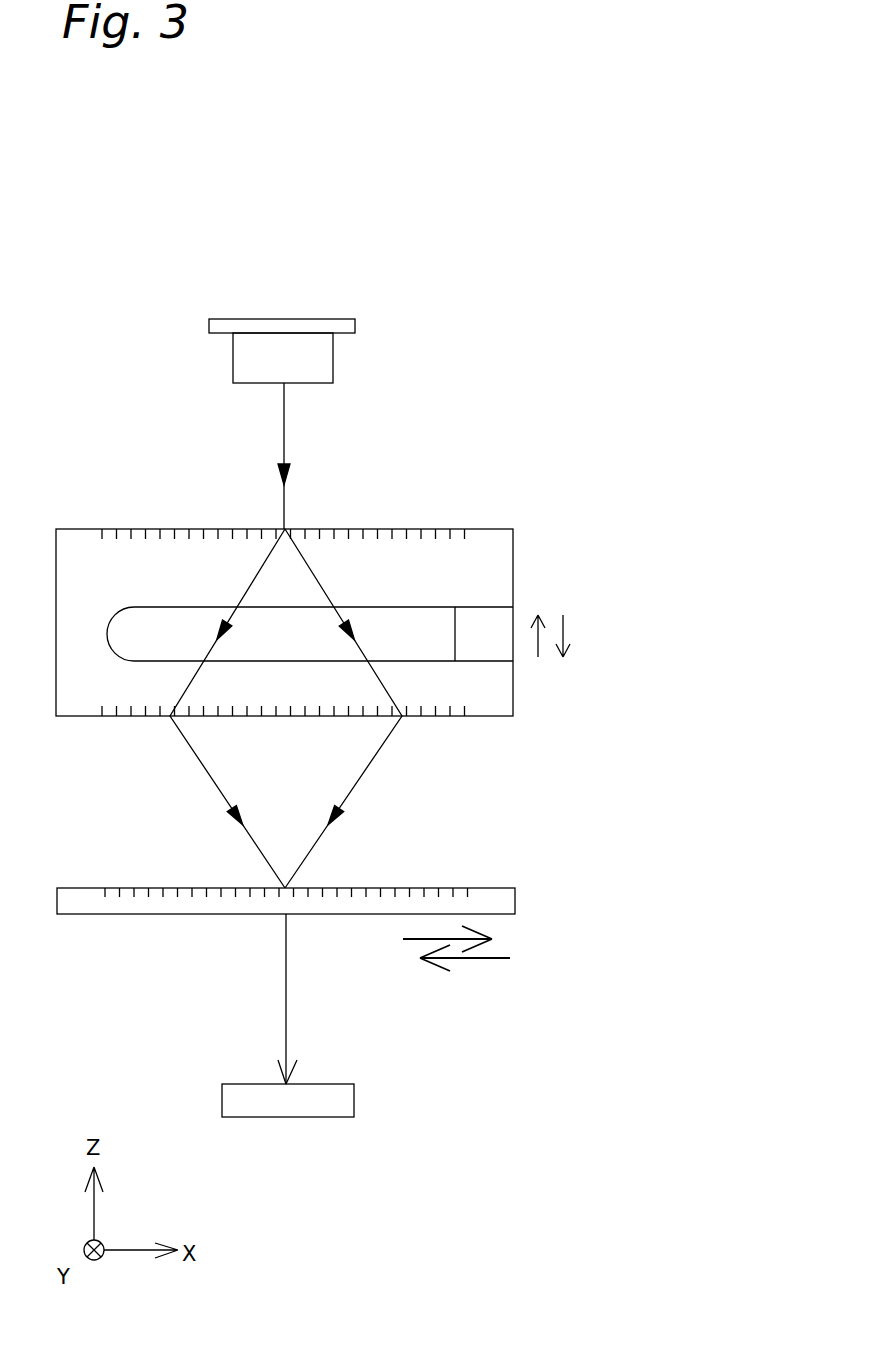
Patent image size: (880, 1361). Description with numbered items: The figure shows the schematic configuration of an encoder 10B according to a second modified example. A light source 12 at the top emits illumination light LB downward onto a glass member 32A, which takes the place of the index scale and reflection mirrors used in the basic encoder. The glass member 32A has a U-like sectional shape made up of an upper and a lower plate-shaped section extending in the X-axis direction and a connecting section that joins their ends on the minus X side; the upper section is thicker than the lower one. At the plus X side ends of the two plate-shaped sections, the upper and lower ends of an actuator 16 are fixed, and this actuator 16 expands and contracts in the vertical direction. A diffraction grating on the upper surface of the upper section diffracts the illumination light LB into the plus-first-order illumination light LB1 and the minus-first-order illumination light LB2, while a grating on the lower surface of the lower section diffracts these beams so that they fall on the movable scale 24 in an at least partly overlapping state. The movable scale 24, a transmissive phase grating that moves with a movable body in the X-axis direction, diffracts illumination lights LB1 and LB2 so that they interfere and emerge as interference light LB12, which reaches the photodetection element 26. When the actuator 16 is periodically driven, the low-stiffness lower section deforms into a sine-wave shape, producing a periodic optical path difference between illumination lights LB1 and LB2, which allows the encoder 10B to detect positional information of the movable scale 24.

The encoder 10B is at (600, 191).
The light source 12 is at (305, 318).
The illumination light LB is at (283, 435).
The glass member 32A is at (513, 563).
The actuator 16 is at (513, 617).
The illumination light LB1 is at (365, 770).
The illumination light LB2 is at (197, 762).
The movable scale 24 is at (515, 897).
The interference light LB12 is at (287, 992).
The photodetection element 26 is at (354, 1102).